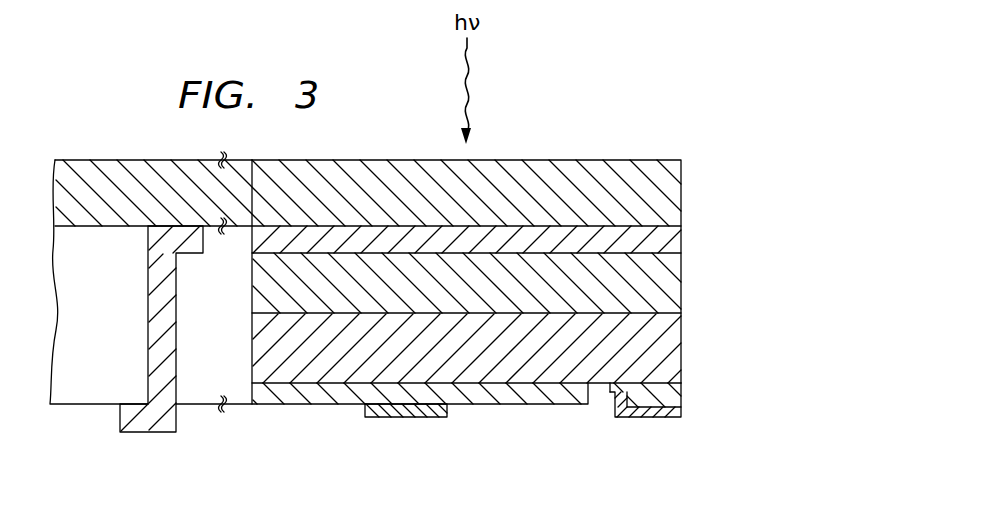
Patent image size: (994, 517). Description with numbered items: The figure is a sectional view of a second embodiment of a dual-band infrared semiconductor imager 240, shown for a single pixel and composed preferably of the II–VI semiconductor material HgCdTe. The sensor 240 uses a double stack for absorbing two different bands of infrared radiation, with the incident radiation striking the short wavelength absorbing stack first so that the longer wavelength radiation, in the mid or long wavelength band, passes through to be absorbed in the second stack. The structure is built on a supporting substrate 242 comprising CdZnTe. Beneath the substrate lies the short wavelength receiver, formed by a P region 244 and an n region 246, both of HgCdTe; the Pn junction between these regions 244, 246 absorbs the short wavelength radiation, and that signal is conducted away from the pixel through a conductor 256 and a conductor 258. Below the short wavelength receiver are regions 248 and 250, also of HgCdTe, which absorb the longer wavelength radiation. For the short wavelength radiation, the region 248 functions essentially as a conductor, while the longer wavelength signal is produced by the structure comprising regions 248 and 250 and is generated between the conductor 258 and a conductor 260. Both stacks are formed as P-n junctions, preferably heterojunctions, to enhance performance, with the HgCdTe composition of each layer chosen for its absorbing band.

The dual-band IR semiconductor imager 240 is at (715, 121).
The supporting substrate 242 is at (590, 160).
The P region 244 is at (682, 243).
The n region 246 is at (682, 292).
The region 248 is at (682, 352).
The region 250 is at (682, 398).
The conductor 256 is at (150, 433).
The conductor 258 is at (648, 418).
The conductor 260 is at (402, 418).